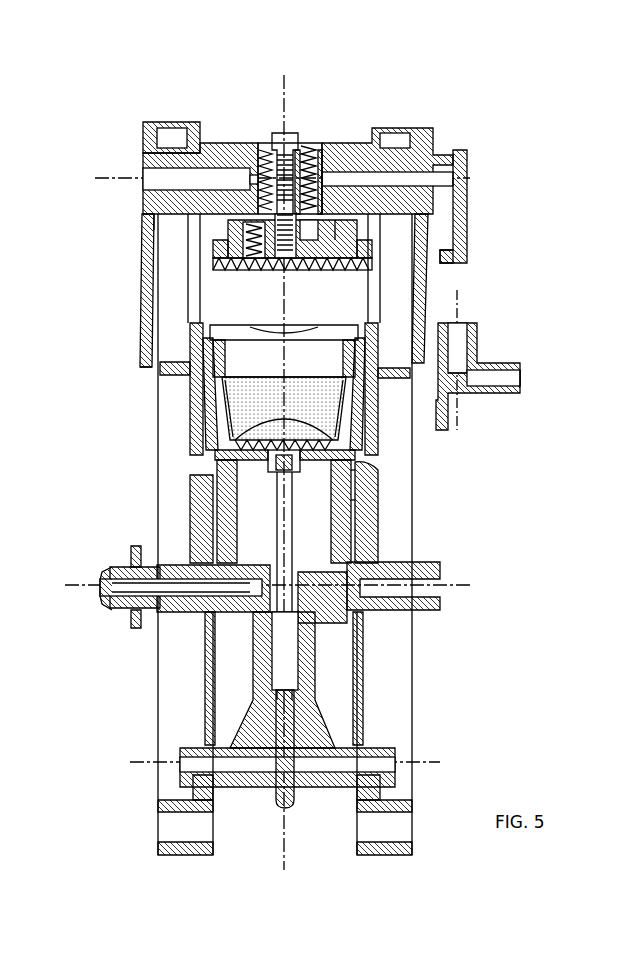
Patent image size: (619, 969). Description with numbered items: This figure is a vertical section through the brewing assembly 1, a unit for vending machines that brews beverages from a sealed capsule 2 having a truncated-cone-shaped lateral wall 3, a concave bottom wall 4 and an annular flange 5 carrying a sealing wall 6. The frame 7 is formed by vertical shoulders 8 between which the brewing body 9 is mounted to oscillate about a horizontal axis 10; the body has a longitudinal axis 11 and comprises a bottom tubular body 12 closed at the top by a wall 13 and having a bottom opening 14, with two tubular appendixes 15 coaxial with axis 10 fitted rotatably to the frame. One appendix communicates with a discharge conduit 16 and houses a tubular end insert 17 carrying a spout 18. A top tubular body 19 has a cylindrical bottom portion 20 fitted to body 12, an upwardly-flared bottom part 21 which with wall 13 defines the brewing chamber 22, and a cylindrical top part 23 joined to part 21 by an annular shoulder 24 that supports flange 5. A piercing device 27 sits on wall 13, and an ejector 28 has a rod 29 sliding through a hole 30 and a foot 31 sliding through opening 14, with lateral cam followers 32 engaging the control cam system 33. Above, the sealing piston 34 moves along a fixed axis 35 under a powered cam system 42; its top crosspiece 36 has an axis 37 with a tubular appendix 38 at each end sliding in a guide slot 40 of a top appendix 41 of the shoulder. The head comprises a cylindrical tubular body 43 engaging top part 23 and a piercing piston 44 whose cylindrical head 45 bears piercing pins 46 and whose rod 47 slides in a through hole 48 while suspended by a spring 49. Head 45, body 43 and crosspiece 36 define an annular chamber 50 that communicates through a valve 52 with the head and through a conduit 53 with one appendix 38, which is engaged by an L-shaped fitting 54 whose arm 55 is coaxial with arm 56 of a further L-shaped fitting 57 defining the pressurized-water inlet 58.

The brewing assembly 1 is at (508, 203).
The sealed capsule 2 is at (141, 350).
The truncated-cone-shaped lateral wall 3 is at (358, 392).
The concave bottom wall 4 is at (291, 432).
The annular flange 5 is at (196, 360).
The sealing wall 6 is at (320, 377).
The frame 7 is at (180, 446).
The vertical shoulder 8 is at (374, 475).
The brewing body 9 is at (364, 470).
The horizontal axis 10 is at (455, 585).
The longitudinal axis 11 is at (290, 825).
The bottom tubular body 12 is at (230, 630).
The wall 13 is at (316, 470).
The bottom opening 14 is at (323, 628).
The tubular appendix 15 is at (395, 565).
The discharge conduit 16 is at (201, 590).
The tubular end insert 17 is at (146, 565).
The spout 18 is at (108, 574).
The top tubular body 19 is at (196, 440).
The cylindrical bottom portion 20 is at (348, 500).
The upwardly-flared bottom part 21 is at (205, 420).
The brewing chamber 22 is at (232, 396).
The cylindrical top part 23 is at (196, 320).
The annular shoulder 24 is at (352, 368).
The piercing device 27 is at (347, 446).
The ejector 28 is at (324, 668).
The rod 29 is at (290, 505).
The hole 30 is at (250, 480).
The foot 31 is at (305, 692).
The lateral cam follower 32 is at (343, 746).
The control cam system 33 is at (381, 772).
The sealing piston 34 is at (338, 140).
The longitudinal axis 35 is at (288, 93).
The top crosspiece 36 is at (232, 152).
The axis 37 is at (150, 178).
The tubular appendix 38 is at (165, 165).
The guide slot 40 is at (148, 284).
The top appendix 41 is at (389, 287).
The powered cam system 42 is at (399, 830).
The cylindrical tubular body 43 is at (340, 225).
The piercing piston 44 is at (316, 222).
The cylindrical head 45 is at (310, 265).
The piercing pins 46 is at (250, 265).
The rod 47 is at (292, 140).
The through hole 48 is at (267, 150).
The spring 49 is at (308, 165).
The annular chamber 50 is at (220, 222).
The valve 52 is at (262, 270).
The conduit 53 is at (352, 205).
The L-shaped fitting 54 is at (468, 145).
The arm 55 is at (468, 225).
The arm 56 is at (476, 345).
The further L-shaped fitting 57 is at (492, 358).
The pressurized-water inlet 58 is at (500, 384).